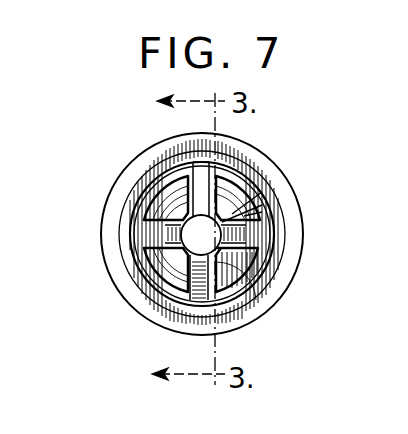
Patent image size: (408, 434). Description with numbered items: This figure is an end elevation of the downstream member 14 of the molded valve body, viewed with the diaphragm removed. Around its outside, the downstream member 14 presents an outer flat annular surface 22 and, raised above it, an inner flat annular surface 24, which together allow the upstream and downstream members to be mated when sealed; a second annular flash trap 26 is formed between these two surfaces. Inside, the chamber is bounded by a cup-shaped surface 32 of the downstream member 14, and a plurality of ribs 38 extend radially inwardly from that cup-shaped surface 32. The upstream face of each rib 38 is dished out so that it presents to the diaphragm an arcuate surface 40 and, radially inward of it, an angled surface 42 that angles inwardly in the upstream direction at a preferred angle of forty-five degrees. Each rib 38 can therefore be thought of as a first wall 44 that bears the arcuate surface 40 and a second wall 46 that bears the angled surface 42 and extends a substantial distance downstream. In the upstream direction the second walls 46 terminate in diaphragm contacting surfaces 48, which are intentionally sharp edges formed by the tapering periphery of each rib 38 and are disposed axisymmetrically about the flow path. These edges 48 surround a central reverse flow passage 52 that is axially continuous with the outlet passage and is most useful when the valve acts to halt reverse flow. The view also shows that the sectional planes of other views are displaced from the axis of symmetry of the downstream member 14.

The downstream member 14 is at (120, 157).
The central reverse flow passage 52 is at (142, 200).
The first wall 44 is at (200, 162).
The second wall 46 is at (218, 198).
The second annular flash trap 26 is at (118, 179).
The cup-shaped surface 32 is at (228, 207).
The inner flat annular surface 24 is at (117, 214).
The diaphragm contacting surfaces 48 is at (247, 218).
The arcuate surface 40 is at (135, 248).
The outer flat annular surface 22 is at (120, 262).
The angled surface 42 is at (242, 240).
The ribs 38 is at (268, 298).